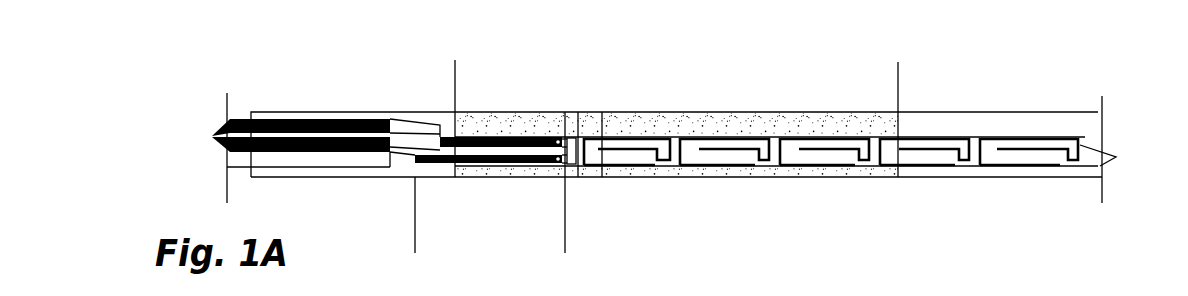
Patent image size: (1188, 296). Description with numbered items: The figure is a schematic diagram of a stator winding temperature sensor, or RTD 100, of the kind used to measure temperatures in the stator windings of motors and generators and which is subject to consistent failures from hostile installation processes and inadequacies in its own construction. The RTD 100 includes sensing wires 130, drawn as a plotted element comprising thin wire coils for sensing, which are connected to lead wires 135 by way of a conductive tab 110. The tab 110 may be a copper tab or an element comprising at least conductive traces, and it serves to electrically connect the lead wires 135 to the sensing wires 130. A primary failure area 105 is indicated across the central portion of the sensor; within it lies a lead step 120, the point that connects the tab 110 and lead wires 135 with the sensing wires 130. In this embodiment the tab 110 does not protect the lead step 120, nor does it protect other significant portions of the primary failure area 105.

The stator winding temperature sensor 100 is at (1064, 95).
The primary failure area 105 is at (457, 71).
The conductive tab 110 is at (607, 240).
The lead step 120 is at (595, 182).
The sensing wires 130 is at (1040, 172).
The lead wires 135 is at (337, 179).